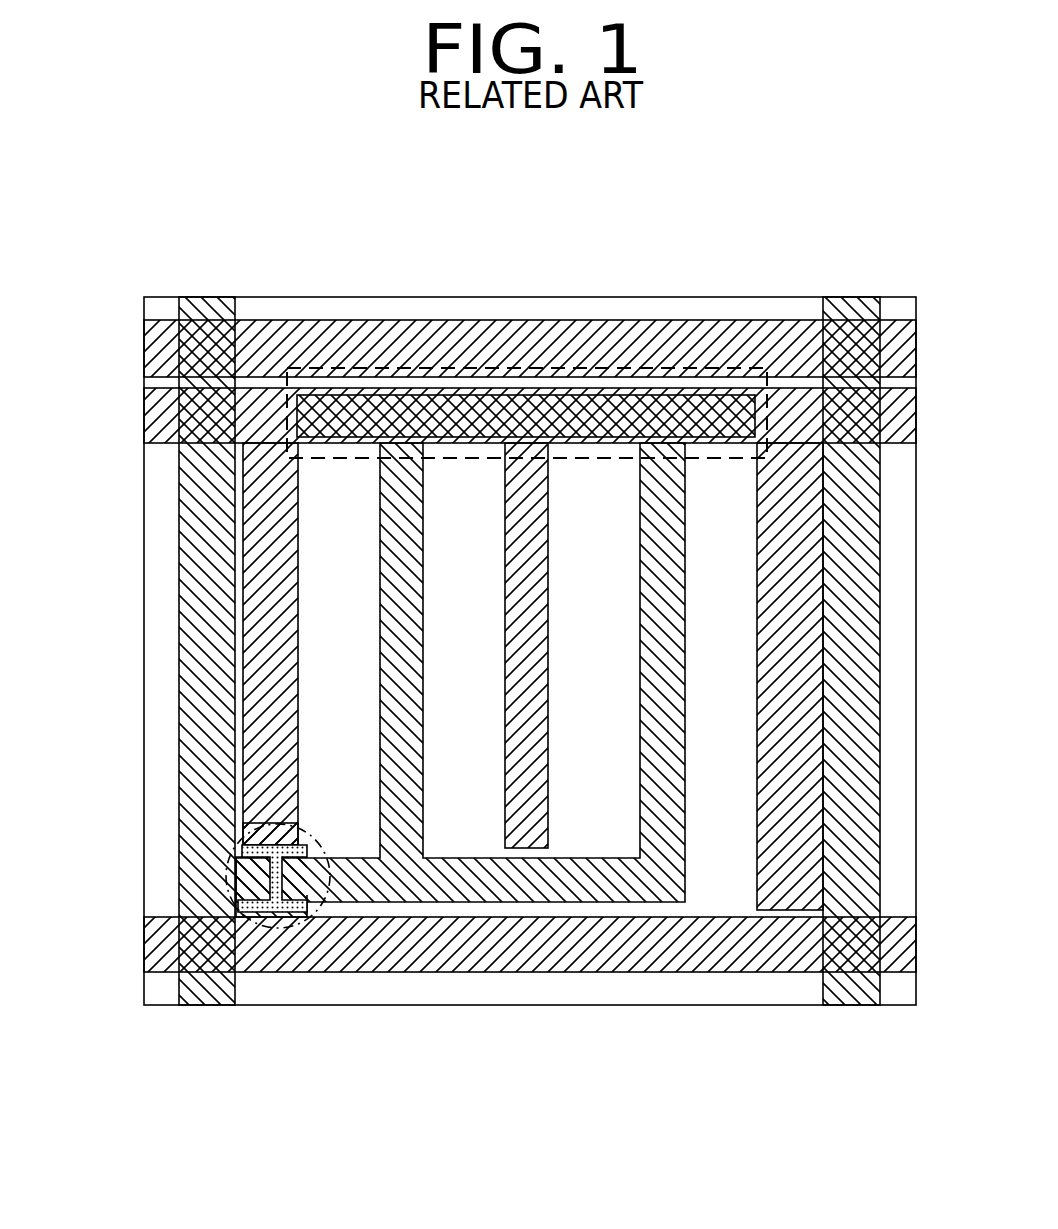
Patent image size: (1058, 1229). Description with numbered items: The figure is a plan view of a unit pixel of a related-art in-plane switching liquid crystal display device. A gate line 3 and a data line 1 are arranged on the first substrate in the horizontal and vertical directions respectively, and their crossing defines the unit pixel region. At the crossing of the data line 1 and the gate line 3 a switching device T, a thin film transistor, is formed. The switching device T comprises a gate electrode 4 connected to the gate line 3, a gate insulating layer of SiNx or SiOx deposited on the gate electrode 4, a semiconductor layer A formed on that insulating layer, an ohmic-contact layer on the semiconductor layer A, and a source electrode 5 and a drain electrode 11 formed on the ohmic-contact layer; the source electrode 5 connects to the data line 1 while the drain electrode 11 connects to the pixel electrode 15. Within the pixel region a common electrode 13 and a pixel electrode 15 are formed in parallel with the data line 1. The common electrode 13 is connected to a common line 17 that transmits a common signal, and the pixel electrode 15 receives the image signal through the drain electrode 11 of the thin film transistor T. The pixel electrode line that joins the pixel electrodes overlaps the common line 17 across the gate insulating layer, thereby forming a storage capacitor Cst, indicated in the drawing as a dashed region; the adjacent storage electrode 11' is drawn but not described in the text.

The data line 1 is at (205, 990).
The gate line 3 is at (638, 955).
The gate electrode 4 is at (250, 826).
The source electrode 5 is at (243, 850).
The drain electrode 11 is at (283, 998).
The storage electrode 11' is at (526, 327).
The common electrode 13 is at (277, 490).
The pixel electrode 15 is at (400, 470).
The common line 17 is at (163, 322).
The semiconductor layer A is at (270, 912).
The switching device T is at (232, 908).
The storage capacitor Cst is at (589, 370).